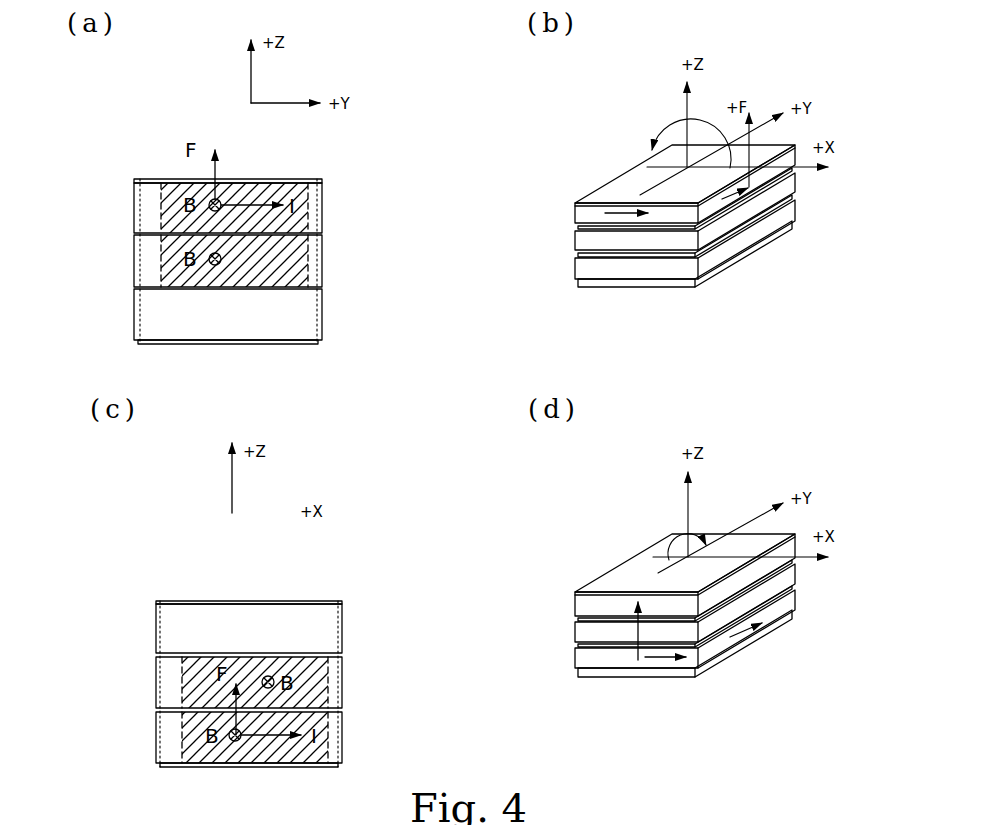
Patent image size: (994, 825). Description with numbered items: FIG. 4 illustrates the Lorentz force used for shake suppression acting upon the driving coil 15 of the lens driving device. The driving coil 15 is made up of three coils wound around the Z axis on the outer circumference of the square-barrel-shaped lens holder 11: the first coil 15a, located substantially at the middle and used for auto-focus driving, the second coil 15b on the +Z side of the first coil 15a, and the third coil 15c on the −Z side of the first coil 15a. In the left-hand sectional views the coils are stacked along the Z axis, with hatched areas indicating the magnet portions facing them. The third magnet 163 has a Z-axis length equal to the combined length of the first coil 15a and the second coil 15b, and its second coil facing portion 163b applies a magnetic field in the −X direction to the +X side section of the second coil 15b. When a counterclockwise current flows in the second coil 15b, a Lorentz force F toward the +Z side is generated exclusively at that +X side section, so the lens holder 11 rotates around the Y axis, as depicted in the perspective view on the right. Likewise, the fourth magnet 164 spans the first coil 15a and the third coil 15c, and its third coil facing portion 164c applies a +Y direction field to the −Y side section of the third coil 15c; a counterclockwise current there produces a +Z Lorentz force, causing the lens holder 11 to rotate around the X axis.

The lens holder 11 is at (297, 181).
The driving coil 15 is at (509, 454).
The first coil 15a is at (322, 262).
The second coil 15b is at (322, 230).
The third coil 15c is at (403, 223).
The third magnet 163 is at (162, 259).
The second coil facing portion 163b is at (162, 201).
The fourth magnet 164 is at (188, 684).
The third coil facing portion 164c is at (187, 744).